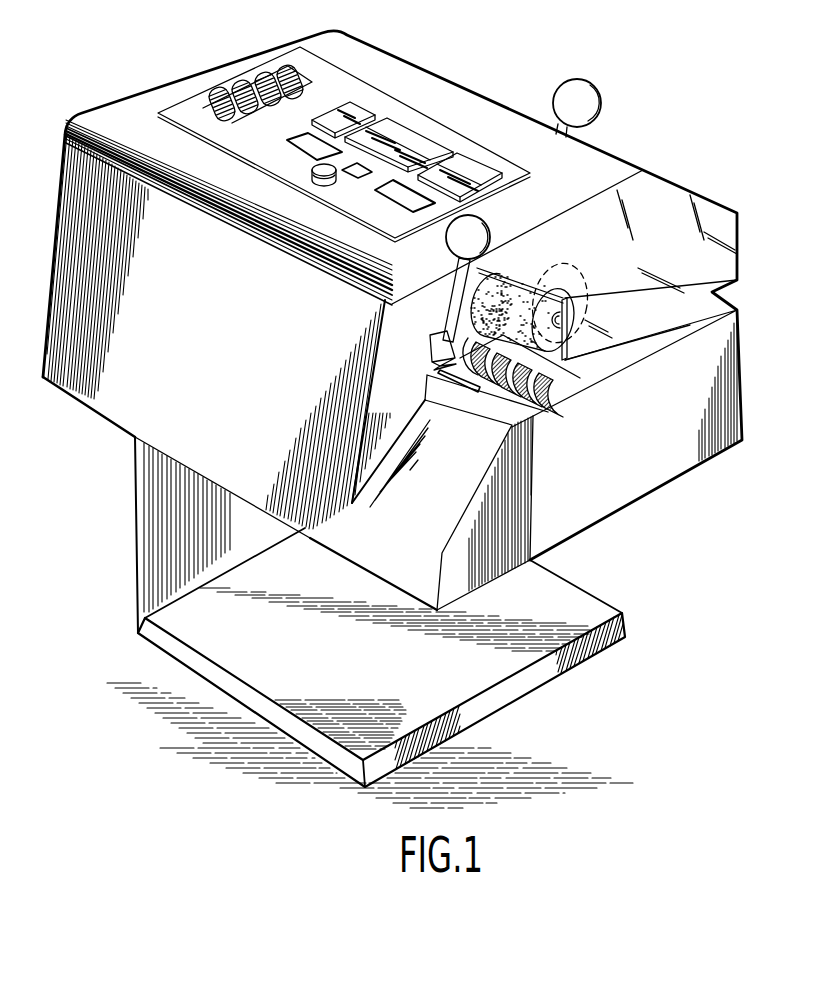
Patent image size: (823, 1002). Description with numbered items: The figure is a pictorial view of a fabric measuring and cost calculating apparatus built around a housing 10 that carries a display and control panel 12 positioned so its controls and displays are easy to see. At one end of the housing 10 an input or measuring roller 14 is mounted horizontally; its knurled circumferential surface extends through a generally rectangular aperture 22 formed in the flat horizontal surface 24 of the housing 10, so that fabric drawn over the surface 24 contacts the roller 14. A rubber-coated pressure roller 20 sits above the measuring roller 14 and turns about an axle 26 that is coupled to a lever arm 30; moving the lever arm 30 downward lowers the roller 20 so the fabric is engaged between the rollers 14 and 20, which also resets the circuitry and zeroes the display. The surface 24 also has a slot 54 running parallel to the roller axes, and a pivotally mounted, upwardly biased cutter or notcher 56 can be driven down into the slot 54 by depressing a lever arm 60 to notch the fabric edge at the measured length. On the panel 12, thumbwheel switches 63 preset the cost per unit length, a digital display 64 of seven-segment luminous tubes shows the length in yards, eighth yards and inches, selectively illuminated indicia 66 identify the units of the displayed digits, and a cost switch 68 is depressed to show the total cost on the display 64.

The housing 10 is at (478, 92).
The display and control panel 12 is at (291, 58).
The input or measuring roller 14 is at (565, 387).
The pressure roller 20 is at (527, 290).
The rectangular aperture 22 is at (519, 400).
The flat horizontal surface 24 is at (612, 364).
The axle 26 is at (588, 317).
The lever arm 30 is at (600, 88).
The slot 54 is at (430, 381).
The cutter or notcher 56 is at (431, 353).
The lever arm 60 is at (484, 222).
The thumbwheel switches 63 is at (246, 80).
The digital display 64 is at (410, 116).
The selectively illuminated indicia 66 is at (366, 128).
The cost switch 68 is at (312, 186).